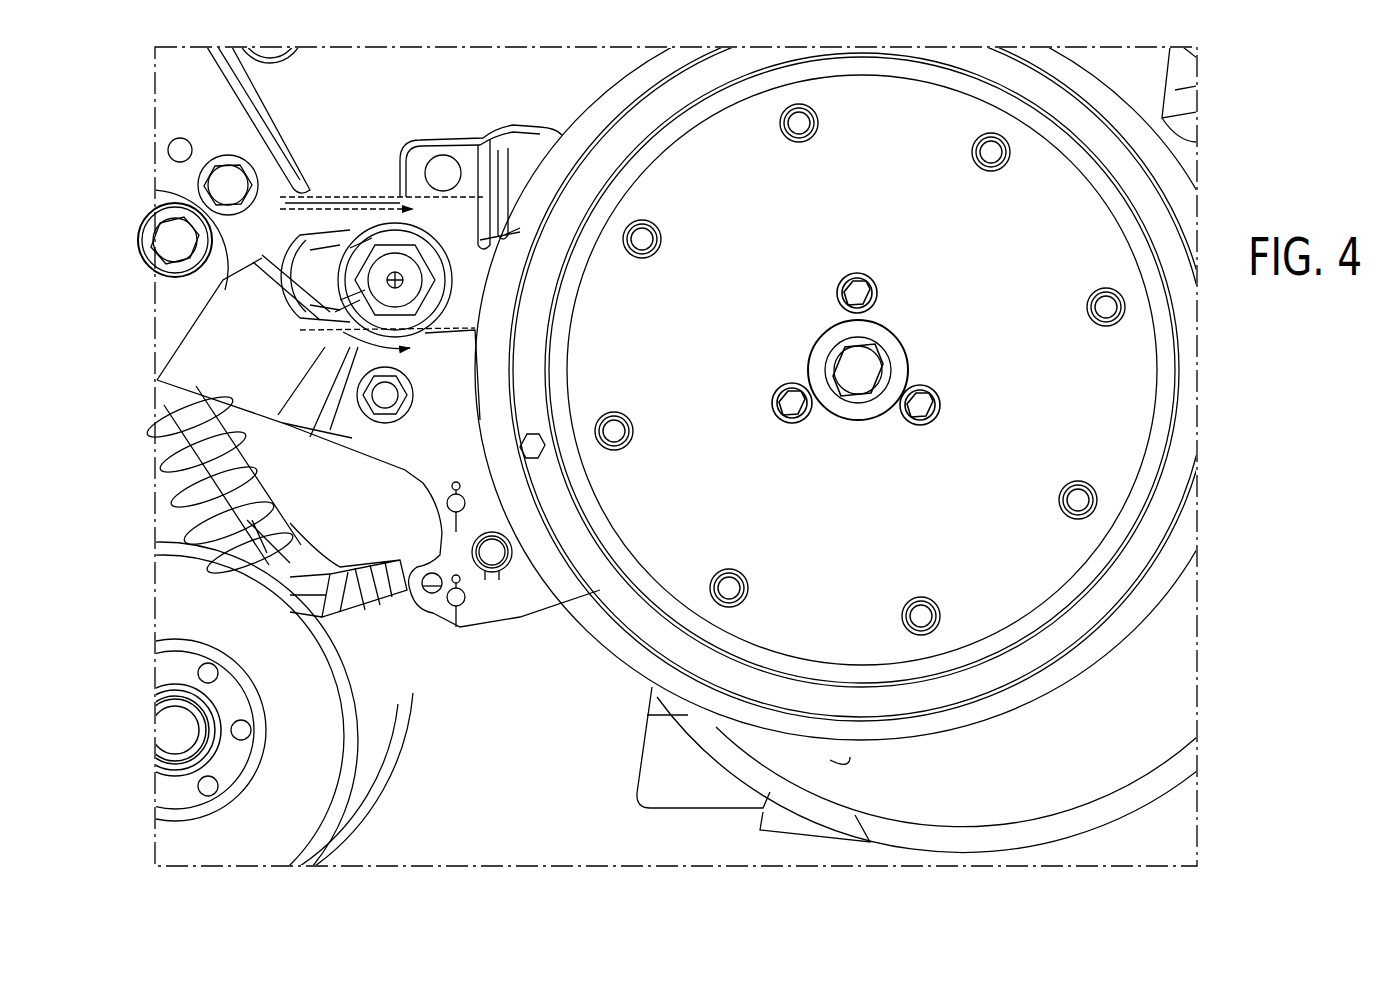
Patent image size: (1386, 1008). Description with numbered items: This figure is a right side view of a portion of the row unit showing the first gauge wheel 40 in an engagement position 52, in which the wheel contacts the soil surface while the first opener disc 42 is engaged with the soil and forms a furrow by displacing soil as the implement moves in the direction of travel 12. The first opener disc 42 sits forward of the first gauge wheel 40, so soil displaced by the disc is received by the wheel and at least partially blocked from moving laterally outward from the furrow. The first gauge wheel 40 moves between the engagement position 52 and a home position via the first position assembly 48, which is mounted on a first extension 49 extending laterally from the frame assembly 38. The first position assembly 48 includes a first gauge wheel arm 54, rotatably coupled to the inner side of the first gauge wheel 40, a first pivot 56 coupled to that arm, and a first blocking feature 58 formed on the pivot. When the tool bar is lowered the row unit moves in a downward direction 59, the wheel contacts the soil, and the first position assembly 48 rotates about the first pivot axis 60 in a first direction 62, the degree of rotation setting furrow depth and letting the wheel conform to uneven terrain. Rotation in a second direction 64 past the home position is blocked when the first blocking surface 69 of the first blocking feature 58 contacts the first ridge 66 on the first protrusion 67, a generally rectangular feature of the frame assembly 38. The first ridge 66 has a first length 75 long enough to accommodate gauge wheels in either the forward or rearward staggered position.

The direction of travel 12 is at (1365, 585).
The frame assembly 38 is at (150, 102).
The first gauge wheel 40 is at (578, 622).
The first opener disc 42 is at (1137, 813).
The first position assembly 48 is at (434, 340).
The first extension 49 is at (352, 232).
The engagement position 52 is at (490, 657).
The first gauge wheel arm 54 is at (480, 290).
The first pivot 56 is at (313, 318).
The first blocking feature 58 is at (287, 240).
The downward direction 59 is at (113, 500).
The first pivot axis 60 is at (396, 279).
The first direction 62 is at (366, 415).
The second direction 64 is at (357, 197).
The first ridge 66 is at (332, 198).
The first protrusion 67 is at (318, 153).
The first blocking surface 69 is at (290, 190).
The first length 75 is at (400, 140).